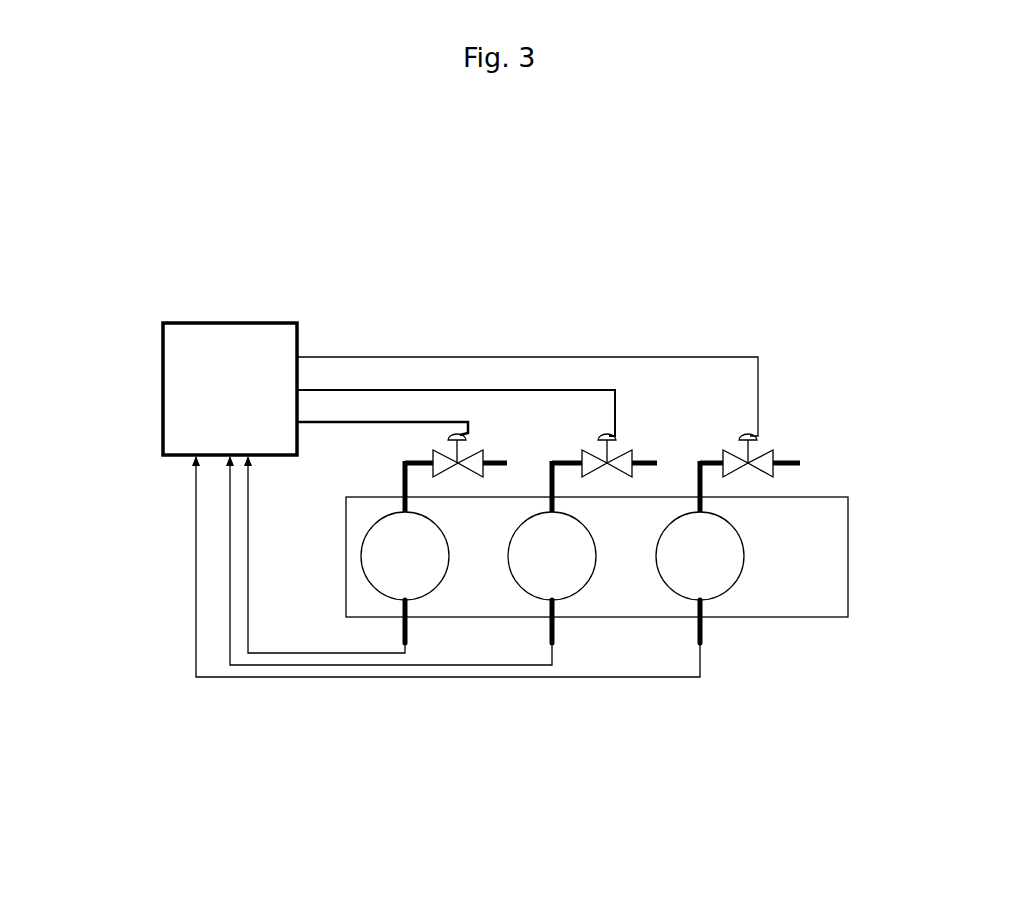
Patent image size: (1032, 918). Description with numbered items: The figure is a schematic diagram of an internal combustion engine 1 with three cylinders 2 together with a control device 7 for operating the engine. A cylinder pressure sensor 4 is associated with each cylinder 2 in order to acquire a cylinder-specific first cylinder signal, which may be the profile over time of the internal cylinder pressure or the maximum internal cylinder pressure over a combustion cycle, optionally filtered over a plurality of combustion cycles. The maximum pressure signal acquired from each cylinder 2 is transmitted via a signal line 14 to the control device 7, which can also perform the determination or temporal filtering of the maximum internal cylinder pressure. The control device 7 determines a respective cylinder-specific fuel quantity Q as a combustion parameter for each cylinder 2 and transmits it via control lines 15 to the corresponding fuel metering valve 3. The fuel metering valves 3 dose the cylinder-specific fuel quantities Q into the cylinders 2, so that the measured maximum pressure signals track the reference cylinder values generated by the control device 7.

The internal combustion engine 1 is at (832, 687).
The cylinder 2 is at (396, 569).
The fuel metering valve 3 is at (477, 460).
The cylinder pressure sensor 4 is at (408, 623).
The control device 7 is at (221, 402).
The signal line 14 is at (272, 653).
The control line 15 is at (390, 422).